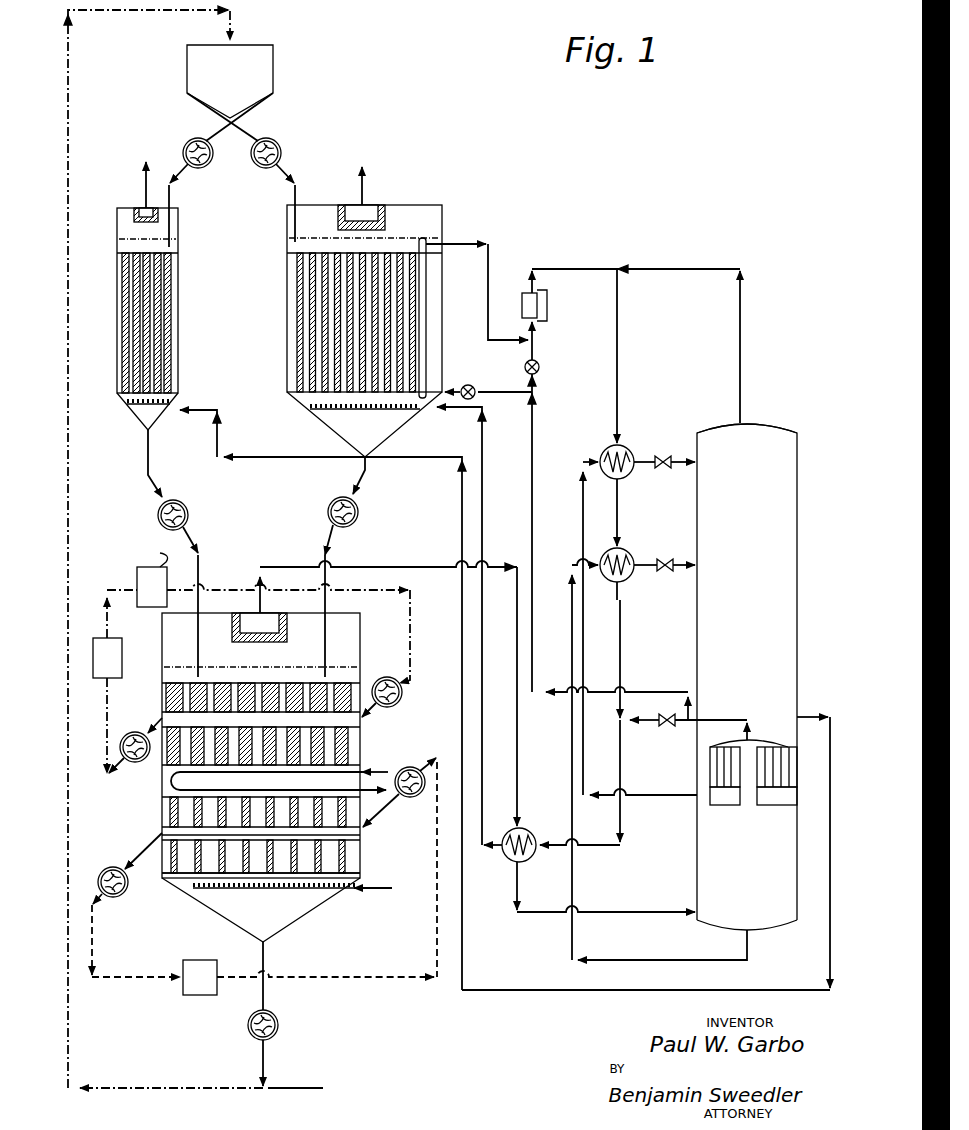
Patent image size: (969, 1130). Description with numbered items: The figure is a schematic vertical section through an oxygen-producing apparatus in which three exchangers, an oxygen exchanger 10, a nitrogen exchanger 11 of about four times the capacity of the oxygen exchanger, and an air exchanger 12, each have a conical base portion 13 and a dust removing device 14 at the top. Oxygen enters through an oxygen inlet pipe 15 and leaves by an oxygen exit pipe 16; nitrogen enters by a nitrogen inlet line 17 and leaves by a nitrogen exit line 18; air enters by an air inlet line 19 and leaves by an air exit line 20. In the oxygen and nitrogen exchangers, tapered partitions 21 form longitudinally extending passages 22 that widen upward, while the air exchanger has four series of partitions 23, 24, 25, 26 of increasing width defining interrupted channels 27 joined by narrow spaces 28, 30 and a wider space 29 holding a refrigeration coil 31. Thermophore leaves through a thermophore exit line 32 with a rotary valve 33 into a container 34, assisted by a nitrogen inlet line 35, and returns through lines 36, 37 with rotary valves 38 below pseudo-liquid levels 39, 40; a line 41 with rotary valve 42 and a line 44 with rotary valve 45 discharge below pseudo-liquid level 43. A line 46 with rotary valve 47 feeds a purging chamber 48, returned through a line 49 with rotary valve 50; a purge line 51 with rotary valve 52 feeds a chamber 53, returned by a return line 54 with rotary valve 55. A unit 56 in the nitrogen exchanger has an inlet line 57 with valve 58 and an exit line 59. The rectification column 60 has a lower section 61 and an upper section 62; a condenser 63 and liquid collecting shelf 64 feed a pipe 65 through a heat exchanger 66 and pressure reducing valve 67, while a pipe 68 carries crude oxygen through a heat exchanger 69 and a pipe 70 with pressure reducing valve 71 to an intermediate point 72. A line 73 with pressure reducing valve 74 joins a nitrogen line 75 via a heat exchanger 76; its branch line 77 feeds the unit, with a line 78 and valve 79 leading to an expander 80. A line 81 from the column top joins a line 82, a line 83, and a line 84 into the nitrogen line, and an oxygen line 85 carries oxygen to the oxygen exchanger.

The oxygen exchanger 10 is at (178, 345).
The nitrogen exchanger 11 is at (292, 326).
The air exchanger 12 is at (162, 812).
The conical base portion 13 is at (130, 427).
The dust removing device 14 is at (134, 212).
The oxygen inlet pipe 15 is at (214, 406).
The oxygen exit pipe 16 is at (146, 185).
The nitrogen inlet line 17 is at (460, 412).
The nitrogen exit line 18 is at (362, 191).
The air inlet line 19 is at (377, 887).
The air exit line 20 is at (270, 566).
The partitions 21 is at (168, 318).
The longitudinally extending passages 22 is at (176, 290).
The partitions 23 is at (362, 856).
The partitions 24 is at (360, 807).
The partitions 25 is at (360, 742).
The partitions 26 is at (345, 680).
The interrupted channels 27 is at (192, 870).
The narrow space 28 is at (162, 834).
The wider space 29 is at (165, 786).
The narrow space 30 is at (160, 718).
The coil 31 is at (378, 768).
The thermophore exit line 32 is at (72, 554).
The rotary valve 33 is at (280, 1023).
The container 34 is at (275, 82).
The nitrogen inlet line 35 is at (303, 1086).
The line 36 is at (222, 126).
The line 37 is at (250, 125).
The rotary valve 38 is at (211, 166).
The pseudo-liquid level 39 is at (177, 239).
The pseudo-liquid level 40 is at (305, 238).
The line 41 is at (150, 473).
The rotary valve 42 is at (188, 510).
The pseudo-liquid level 43 is at (160, 681).
The line 44 is at (357, 493).
The rotary valve 45 is at (358, 515).
The line 46 is at (124, 770).
The rotary valve 47 is at (130, 761).
The chamber 48 is at (130, 658).
The line 49 is at (411, 675).
The rotary valve 50 is at (403, 692).
The purge line 51 is at (132, 860).
The rotary valve 52 is at (115, 908).
The chamber 53 is at (264, 878).
The return line 54 is at (374, 822).
The rotary valve 55 is at (404, 797).
The unit 56 is at (426, 242).
The inlet line 57 is at (500, 391).
The valve 58 is at (468, 385).
The exit line 59 is at (488, 277).
The rectification column 60 is at (762, 412).
The lower section 61 is at (747, 894).
The upper section 62 is at (747, 475).
The condenser 63 is at (764, 746).
The liquid collecting shelf 64 is at (760, 806).
The pipe 65 is at (652, 794).
The heat exchanger 66 is at (628, 450).
The pressure reducing valve 67 is at (667, 456).
The pipe 68 is at (664, 958).
The heat exchanger 69 is at (628, 553).
The pipe 70 is at (630, 578).
The pressure reducing valve 71 is at (668, 558).
The intermediate point 72 is at (699, 565).
The line 73 is at (716, 716).
The pressure reducing valve 74 is at (662, 726).
The nitrogen line 75 is at (622, 762).
The heat exchanger 76 is at (533, 835).
The branch line 77 is at (664, 690).
The line 78 is at (535, 353).
The valve 79 is at (540, 368).
The expander 80 is at (540, 298).
The line 81 is at (742, 354).
The line 82 is at (619, 330).
The line 83 is at (580, 267).
The line 84 is at (622, 645).
The oxygen line 85 is at (428, 460).